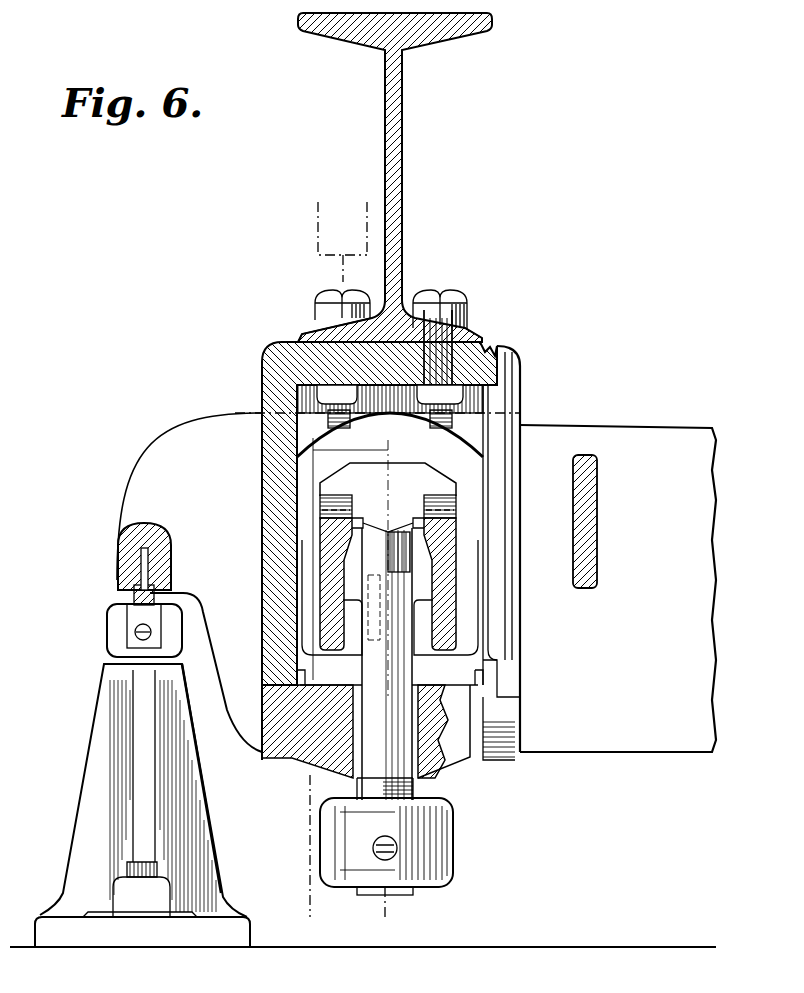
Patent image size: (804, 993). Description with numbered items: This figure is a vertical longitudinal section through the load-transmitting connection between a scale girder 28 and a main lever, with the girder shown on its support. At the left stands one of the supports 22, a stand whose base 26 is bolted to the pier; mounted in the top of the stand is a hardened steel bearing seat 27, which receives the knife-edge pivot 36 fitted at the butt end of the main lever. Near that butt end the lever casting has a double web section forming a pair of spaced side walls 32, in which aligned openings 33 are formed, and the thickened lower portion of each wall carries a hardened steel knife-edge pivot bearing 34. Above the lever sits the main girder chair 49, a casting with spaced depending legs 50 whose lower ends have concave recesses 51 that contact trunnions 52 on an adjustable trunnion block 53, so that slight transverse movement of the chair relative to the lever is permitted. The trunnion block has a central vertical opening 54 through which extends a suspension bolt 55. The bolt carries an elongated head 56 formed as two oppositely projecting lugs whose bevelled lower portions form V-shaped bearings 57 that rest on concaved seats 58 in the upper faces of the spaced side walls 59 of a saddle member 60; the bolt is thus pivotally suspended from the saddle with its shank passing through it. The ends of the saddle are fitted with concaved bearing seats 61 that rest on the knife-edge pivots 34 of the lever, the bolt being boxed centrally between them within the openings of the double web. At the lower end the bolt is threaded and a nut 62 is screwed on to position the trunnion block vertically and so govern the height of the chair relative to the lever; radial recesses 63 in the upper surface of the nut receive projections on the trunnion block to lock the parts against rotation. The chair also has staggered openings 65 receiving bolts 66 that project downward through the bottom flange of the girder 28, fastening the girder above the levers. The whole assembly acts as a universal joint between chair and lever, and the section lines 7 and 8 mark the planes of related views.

The rail 28 is at (403, 130).
The staggered openings 65 is at (470, 360).
The bolts 66 is at (333, 292).
The main girder chair 49 is at (264, 362).
The depending legs 50 is at (268, 540).
The aligned openings 33 is at (480, 497).
The suspension bolt 55 is at (395, 545).
The elongated head 56 is at (388, 517).
The V-shaped bearings 57 is at (325, 500).
The concaved seats 58 is at (330, 520).
The side walls 59 is at (335, 578).
The saddle member 60 is at (370, 604).
The concaved bearing seats 61 is at (312, 642).
The knife-edge pivot bearing 34 is at (440, 640).
The concave recesses 51 is at (262, 678).
The trunnions 52 is at (500, 712).
The adjustable trunnion block 53 is at (460, 760).
The central vertical opening 54 is at (355, 777).
The nut 62 is at (345, 835).
The radial recesses 63 is at (400, 808).
The spaced side walls 32 is at (618, 588).
The section line 7 is at (332, 561).
The section line 8 is at (374, 561).
The base 26 is at (142, 929).
The supports 22 is at (143, 790).
The hardened steel bearing seat 27 is at (110, 616).
The knife-edge pivot 36 is at (118, 600).